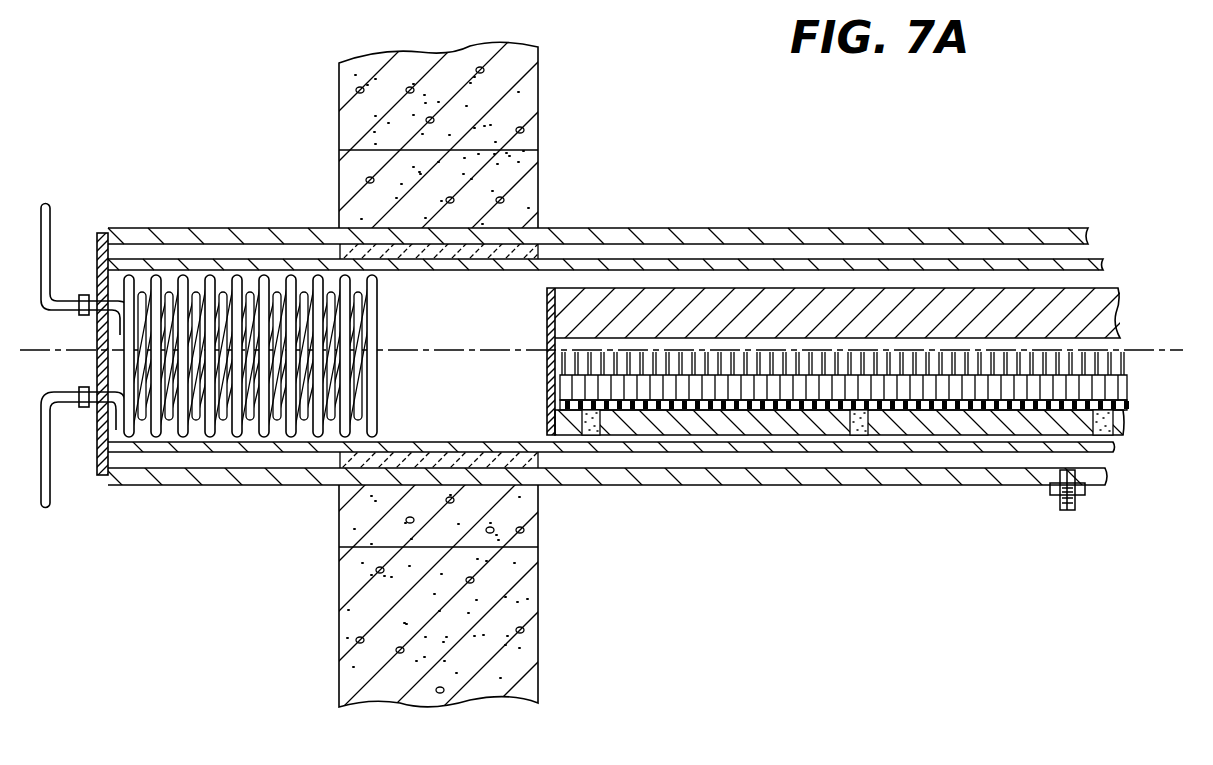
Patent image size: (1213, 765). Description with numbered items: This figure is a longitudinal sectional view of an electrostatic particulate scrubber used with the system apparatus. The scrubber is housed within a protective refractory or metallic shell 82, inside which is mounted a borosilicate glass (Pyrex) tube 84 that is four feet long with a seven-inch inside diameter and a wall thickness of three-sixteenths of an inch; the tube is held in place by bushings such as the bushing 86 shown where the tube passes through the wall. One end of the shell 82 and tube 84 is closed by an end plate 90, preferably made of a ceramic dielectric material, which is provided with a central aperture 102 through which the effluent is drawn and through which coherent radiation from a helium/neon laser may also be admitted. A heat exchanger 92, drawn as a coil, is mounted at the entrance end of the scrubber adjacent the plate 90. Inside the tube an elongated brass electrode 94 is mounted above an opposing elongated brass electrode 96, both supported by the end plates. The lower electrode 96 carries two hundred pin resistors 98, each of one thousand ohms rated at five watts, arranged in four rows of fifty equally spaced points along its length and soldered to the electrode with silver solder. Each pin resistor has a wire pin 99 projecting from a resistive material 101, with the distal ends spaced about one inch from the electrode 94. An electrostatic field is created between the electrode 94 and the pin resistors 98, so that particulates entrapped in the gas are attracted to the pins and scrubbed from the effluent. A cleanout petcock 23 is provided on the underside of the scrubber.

The protective shell 82 is at (842, 233).
The borosilicate glass tube 84 is at (712, 262).
The bushing 86 is at (548, 258).
The end plate 90 is at (103, 474).
The heat exchanger 92 is at (383, 313).
The brass electrode 94 is at (1110, 318).
The opposing brass electrode 96 is at (1125, 418).
The pin resistor 98 is at (1110, 390).
The wire pin 99 is at (1127, 362).
The resistive material 101 is at (1035, 393).
The central aperture 102 is at (97, 347).
The cleanout petcock 23 is at (1080, 503).